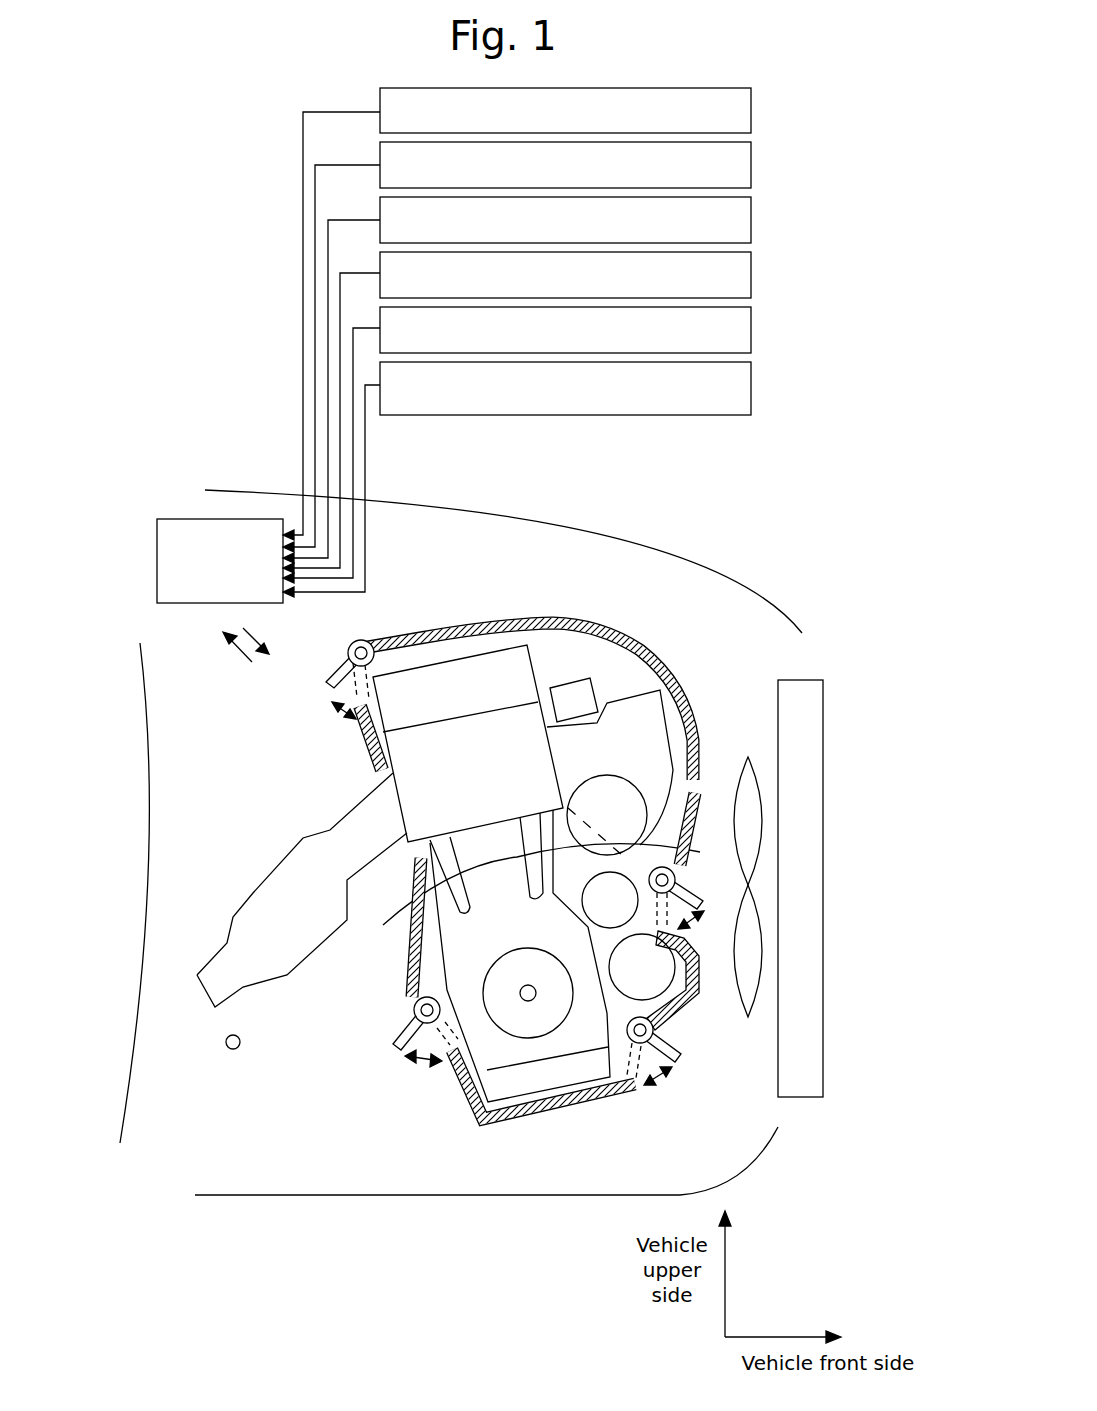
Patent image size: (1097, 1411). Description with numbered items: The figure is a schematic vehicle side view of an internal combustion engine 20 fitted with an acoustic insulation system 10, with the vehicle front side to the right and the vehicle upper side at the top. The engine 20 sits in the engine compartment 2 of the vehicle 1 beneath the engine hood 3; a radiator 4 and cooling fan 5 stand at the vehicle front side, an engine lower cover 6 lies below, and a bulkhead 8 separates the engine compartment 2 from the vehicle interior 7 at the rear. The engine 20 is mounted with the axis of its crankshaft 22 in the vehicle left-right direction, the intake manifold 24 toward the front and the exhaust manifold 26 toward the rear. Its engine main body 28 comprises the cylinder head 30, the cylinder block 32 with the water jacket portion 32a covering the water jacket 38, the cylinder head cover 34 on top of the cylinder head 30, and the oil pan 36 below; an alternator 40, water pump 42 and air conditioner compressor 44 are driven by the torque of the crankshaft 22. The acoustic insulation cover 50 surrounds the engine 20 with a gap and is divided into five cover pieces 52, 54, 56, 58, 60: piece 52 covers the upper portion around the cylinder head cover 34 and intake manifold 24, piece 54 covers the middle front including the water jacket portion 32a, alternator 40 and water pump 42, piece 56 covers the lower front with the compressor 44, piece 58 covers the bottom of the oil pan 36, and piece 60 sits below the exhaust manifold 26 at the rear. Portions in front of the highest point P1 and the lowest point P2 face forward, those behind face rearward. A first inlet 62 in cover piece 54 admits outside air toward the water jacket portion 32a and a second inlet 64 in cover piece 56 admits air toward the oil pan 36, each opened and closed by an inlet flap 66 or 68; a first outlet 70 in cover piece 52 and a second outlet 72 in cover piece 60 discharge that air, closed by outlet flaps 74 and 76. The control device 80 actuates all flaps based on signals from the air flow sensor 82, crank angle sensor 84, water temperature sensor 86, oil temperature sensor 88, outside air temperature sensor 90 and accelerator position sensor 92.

The vehicle 1 is at (816, 478).
The engine compartment 2 is at (682, 577).
The engine hood 3 is at (542, 518).
The radiator 4 is at (823, 690).
The cooling fan 5 is at (748, 755).
The engine lower cover 6 is at (577, 1197).
The vehicle interior 7 is at (78, 1005).
The bulkhead 8 is at (123, 1125).
The acoustic insulation system 10 is at (573, 585).
The internal combustion engine 20 is at (343, 778).
The crankshaft 22 is at (420, 1003).
The intake manifold 24 is at (627, 645).
The exhaust manifold 26 is at (262, 880).
The engine main body 28 is at (555, 652).
The cylinder head 30 is at (447, 800).
The cylinder block 32 is at (520, 993).
The water jacket portion 32a is at (683, 833).
The cylinder head cover 34 is at (485, 670).
The oil pan 36 is at (518, 1083).
The water jacket 38 is at (412, 927).
The alternator 40 is at (640, 800).
The water pump 42 is at (688, 856).
The A/C compressor 44 is at (685, 1000).
The acoustic insulation cover 50 is at (700, 675).
The cover piece 52 is at (357, 710).
The cover piece 54 is at (680, 877).
The cover piece 56 is at (700, 985).
The cover piece 58 is at (597, 1105).
The cover piece 60 is at (430, 964).
The first inlet 62 is at (703, 912).
The second inlet 64 is at (678, 1058).
The first inlet flap 66 is at (705, 922).
The second inlet flap 68 is at (675, 1063).
The first outlet 70 is at (350, 660).
The second outlet 72 is at (405, 1040).
The first outlet flap 74 is at (333, 678).
The second outlet flap 76 is at (395, 1062).
The control device 80 is at (232, 519).
The air flow sensor 82 is at (753, 108).
The crank angle sensor 84 is at (753, 162).
The water temperature sensor 86 is at (753, 218).
The oil temperature sensor 88 is at (753, 272).
The outside air temperature sensor 90 is at (753, 327).
The accelerator position sensor 92 is at (753, 385).
The highest point P1 is at (553, 623).
The lowest point P2 is at (482, 1130).